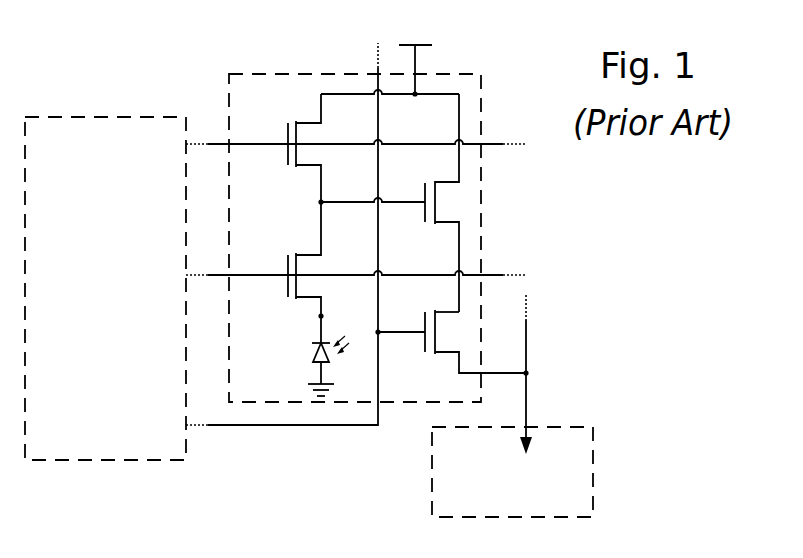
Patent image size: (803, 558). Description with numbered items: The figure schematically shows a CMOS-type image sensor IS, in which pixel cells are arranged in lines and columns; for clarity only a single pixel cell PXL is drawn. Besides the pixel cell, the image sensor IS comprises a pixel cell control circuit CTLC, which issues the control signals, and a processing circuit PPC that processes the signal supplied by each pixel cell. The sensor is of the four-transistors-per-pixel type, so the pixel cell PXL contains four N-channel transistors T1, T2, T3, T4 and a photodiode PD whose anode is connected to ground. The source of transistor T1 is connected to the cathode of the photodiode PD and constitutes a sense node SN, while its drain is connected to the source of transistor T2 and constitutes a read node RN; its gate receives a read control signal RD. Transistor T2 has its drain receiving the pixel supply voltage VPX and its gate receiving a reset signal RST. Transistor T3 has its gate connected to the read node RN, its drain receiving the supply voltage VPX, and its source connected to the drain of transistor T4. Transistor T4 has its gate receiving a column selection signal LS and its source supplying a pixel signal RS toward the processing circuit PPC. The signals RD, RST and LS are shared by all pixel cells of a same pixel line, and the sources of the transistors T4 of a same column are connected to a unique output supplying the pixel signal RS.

The image sensor IS is at (58, 86).
The pixel cell control circuit CTLC is at (97, 307).
The pixel cell PXL is at (283, 107).
The processing circuit PPC is at (488, 487).
The reset signal RST is at (330, 144).
The read control signal RD is at (336, 275).
The column selection signal LS is at (287, 241).
The pixel supply voltage VPX is at (390, 56).
The transistor T1 is at (286, 296).
The transistor T2 is at (286, 165).
The transistor T3 is at (424, 222).
The transistor T4 is at (432, 353).
The read node RN is at (324, 205).
The sense node SN is at (325, 314).
The photodiode PD is at (312, 352).
The pixel signal RS is at (526, 390).